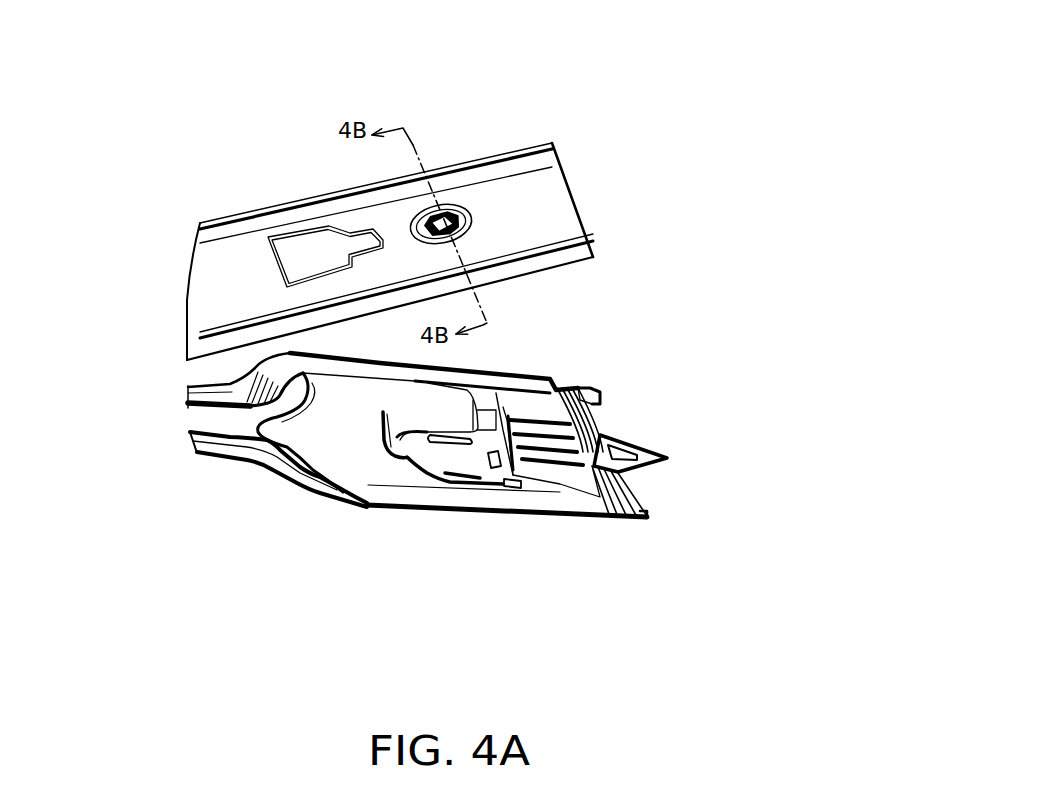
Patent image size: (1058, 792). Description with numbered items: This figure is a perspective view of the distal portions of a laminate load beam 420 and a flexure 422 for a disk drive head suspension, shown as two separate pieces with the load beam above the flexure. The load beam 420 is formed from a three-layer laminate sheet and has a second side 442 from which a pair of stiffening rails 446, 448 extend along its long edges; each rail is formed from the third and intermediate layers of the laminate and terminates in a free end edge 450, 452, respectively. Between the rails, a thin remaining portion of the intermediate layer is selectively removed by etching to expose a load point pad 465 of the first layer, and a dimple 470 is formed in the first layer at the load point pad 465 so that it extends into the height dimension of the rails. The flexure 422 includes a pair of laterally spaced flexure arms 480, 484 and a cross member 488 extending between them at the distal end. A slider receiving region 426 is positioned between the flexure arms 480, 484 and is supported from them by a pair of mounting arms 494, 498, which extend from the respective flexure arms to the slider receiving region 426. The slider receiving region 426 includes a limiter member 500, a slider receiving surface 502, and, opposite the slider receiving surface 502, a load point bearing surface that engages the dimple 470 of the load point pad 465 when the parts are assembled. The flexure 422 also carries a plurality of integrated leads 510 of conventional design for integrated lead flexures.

The laminate load beam 420 is at (197, 297).
The flexure 422 is at (193, 440).
The slider receiving region 426 is at (459, 500).
The second side 442 is at (550, 192).
The stiffening rail 446 is at (467, 162).
The stiffening rail 448 is at (530, 289).
The free end edge 450 is at (512, 149).
The free end edge 452 is at (565, 268).
The load point pad 465 is at (408, 226).
The dimple 470 is at (408, 226).
The flexure arm 480 is at (345, 380).
The flexure arm 484 is at (418, 500).
The cross member 488 is at (637, 493).
The mounting arm 494 is at (510, 415).
The mounting arm 498 is at (577, 523).
The limiter member 500 is at (458, 363).
The slider receiving surface 502 is at (490, 506).
The integrated leads 510 is at (377, 382).